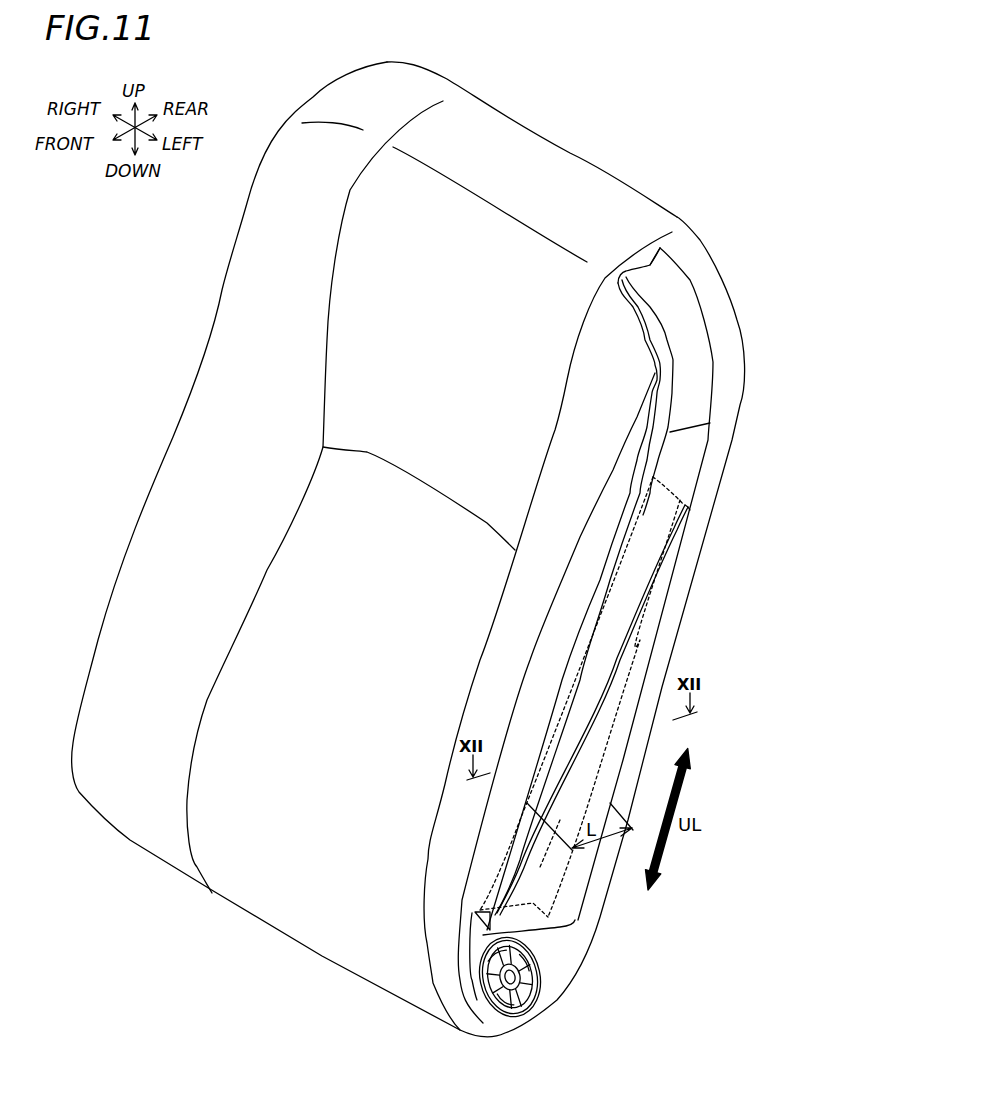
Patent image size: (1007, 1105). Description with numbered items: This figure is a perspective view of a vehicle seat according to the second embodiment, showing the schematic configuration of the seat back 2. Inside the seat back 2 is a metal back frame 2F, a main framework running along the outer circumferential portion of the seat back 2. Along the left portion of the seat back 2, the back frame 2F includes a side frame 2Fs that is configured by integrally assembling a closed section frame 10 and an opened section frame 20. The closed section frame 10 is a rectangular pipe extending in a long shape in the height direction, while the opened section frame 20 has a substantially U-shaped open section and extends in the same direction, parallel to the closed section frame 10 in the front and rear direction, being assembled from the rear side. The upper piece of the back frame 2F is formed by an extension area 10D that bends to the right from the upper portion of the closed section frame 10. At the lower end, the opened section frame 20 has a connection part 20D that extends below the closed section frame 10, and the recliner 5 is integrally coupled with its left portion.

The seat back 2 is at (236, 329).
The back frame 2F is at (702, 336).
The side frame 2Fs is at (438, 600).
The closed section frame 10 is at (567, 629).
The extension area 10D is at (673, 290).
The opened section frame 20 is at (613, 691).
The connection part 20D is at (545, 937).
The recliner 5 is at (551, 988).